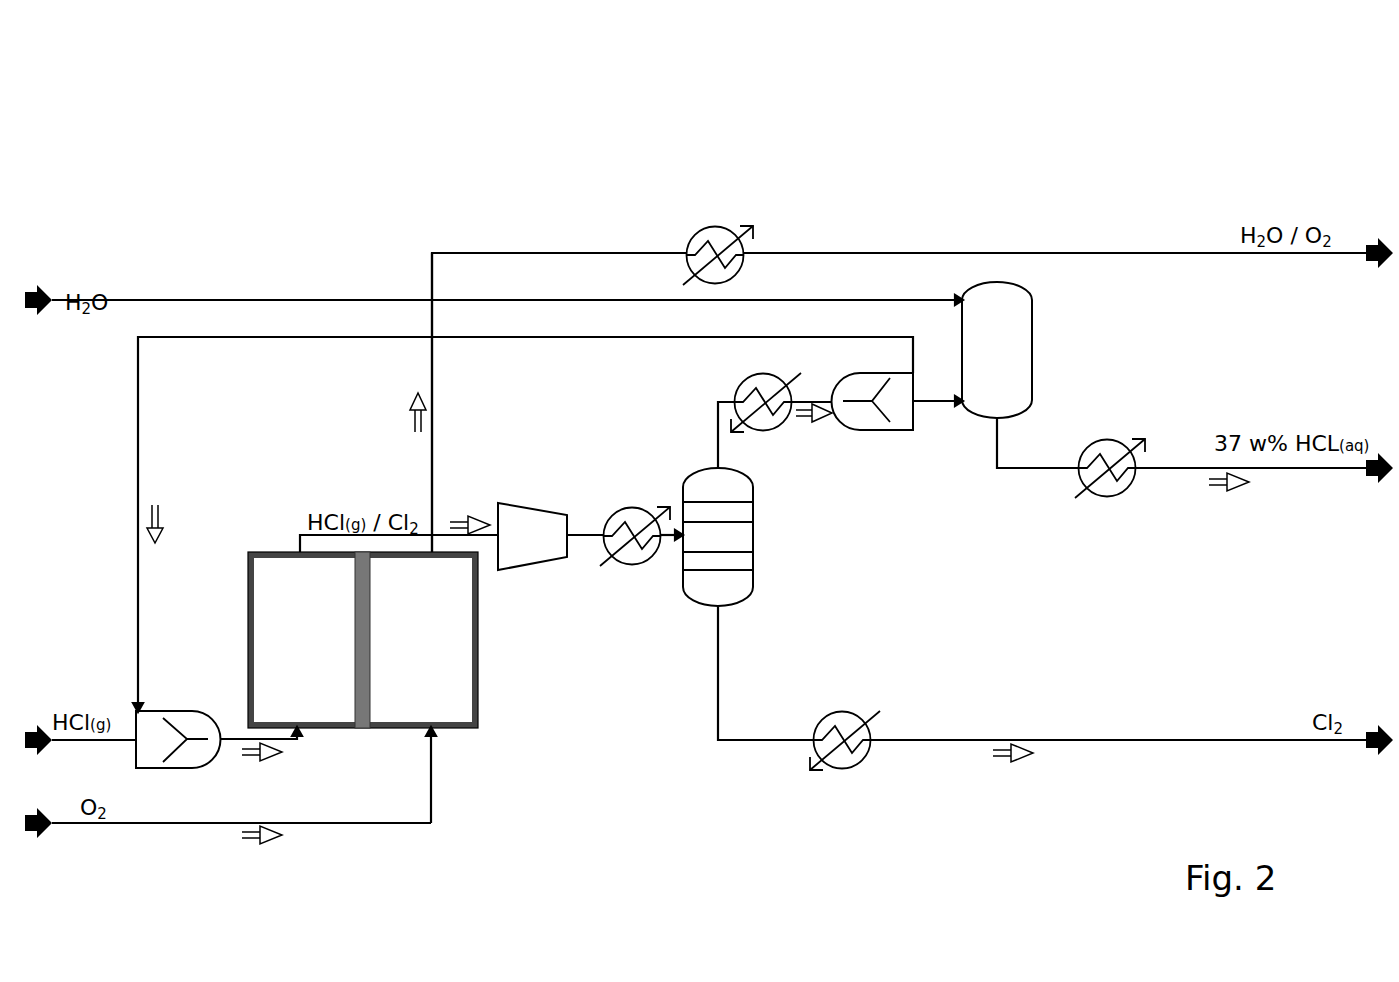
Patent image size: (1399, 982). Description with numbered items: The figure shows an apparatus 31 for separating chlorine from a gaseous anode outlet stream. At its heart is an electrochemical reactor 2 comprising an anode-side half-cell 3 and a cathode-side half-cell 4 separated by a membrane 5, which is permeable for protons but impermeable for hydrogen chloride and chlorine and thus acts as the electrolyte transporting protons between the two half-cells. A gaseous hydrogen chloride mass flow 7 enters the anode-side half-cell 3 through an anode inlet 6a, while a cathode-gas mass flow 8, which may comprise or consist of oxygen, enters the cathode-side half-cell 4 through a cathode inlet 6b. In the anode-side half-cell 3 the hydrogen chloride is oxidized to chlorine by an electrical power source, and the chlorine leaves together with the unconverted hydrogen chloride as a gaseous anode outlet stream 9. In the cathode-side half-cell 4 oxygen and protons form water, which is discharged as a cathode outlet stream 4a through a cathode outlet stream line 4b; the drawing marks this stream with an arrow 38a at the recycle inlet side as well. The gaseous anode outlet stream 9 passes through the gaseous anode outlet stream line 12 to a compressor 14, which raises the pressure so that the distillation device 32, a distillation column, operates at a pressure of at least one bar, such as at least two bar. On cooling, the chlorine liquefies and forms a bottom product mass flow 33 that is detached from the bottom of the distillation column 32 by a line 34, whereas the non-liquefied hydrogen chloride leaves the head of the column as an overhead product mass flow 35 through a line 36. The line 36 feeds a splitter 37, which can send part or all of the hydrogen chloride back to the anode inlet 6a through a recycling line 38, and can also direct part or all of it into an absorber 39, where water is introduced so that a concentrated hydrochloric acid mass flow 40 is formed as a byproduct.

The electrochemical reactor 2 is at (446, 729).
The anode-side half-cell 3 is at (312, 687).
The cathode-side half-cell 4 is at (423, 687).
The cathode outlet stream 4a is at (404, 412).
The cathode outlet stream line 4b is at (433, 428).
The membrane 5 is at (362, 718).
The anode inlet 6a is at (298, 731).
The cathode inlet 6b is at (433, 731).
The gaseous hydrogen chloride mass flow 7 is at (167, 746).
The cathode-gas mass flow 8 is at (241, 842).
The gaseous anode outlet stream 9 is at (459, 521).
The gaseous anode outlet stream line 12 is at (299, 533).
The compressor 14 is at (539, 544).
The apparatus 31 is at (1135, 152).
The distillation device 32 is at (729, 544).
The bottom product mass flow 33 is at (1013, 762).
The line 34 is at (1147, 740).
The overhead product mass flow 35 is at (812, 423).
The line 36 is at (828, 398).
The splitter 37 is at (880, 431).
The recycling line 38 is at (135, 655).
The recycle stream 38a is at (174, 524).
The absorber 39 is at (1008, 364).
The concentrated hydrochloric acid mass flow 40 is at (1228, 490).